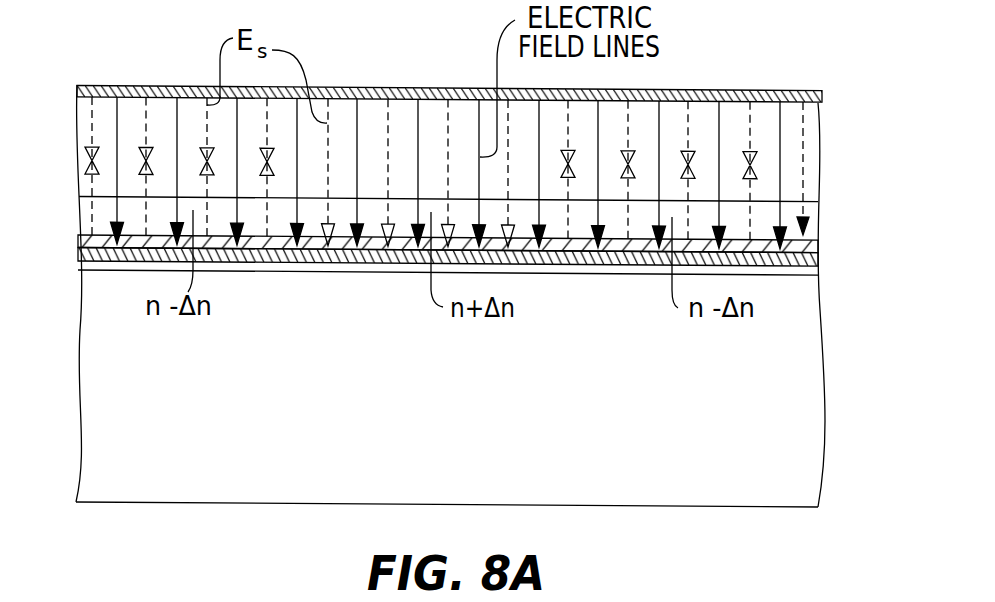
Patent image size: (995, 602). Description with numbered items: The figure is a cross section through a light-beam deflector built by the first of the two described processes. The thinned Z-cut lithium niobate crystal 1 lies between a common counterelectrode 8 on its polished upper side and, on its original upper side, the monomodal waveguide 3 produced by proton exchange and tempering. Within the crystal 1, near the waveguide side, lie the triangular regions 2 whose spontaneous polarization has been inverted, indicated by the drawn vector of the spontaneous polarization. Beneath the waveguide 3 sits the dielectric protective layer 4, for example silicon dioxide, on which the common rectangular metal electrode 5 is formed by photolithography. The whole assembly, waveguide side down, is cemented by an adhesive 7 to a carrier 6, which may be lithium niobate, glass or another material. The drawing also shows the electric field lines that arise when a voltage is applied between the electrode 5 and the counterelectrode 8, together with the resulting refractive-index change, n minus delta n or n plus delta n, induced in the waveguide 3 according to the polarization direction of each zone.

The lithium niobate crystal 1 is at (807, 122).
The triangular region 2 is at (132, 137).
The monomodal waveguide 3 is at (813, 212).
The dielectric protective layer 4 is at (818, 242).
The metal electrode 5 is at (818, 260).
The carrier 6 is at (740, 500).
The adhesive 7 is at (793, 272).
The counterelectrode 8 is at (767, 92).